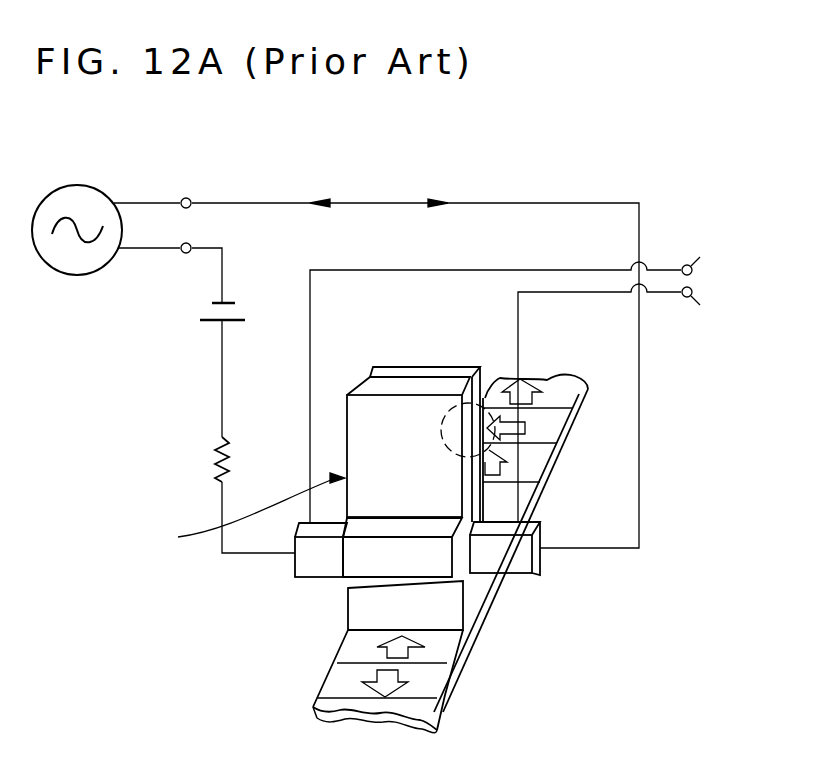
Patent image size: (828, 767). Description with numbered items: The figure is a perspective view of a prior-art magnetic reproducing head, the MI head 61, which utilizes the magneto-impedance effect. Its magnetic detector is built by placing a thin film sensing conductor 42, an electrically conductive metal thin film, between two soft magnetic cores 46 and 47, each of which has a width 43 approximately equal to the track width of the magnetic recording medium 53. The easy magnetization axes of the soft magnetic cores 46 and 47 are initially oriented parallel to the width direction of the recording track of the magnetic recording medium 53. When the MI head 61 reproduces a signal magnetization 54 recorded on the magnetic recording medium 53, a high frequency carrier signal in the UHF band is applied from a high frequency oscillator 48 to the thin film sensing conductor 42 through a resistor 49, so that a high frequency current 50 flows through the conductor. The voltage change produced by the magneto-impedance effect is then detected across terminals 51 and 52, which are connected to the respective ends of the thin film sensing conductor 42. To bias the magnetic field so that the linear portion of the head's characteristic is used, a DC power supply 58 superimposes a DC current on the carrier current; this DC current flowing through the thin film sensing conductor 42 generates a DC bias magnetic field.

The thin film sensing conductor 42 is at (302, 560).
The width 43 is at (470, 367).
The soft magnetic core 46 is at (483, 490).
The soft magnetic core 47 is at (478, 502).
The high frequency oscillator 48 is at (103, 188).
The resistor 49 is at (215, 450).
The high frequency current 50 is at (380, 202).
The terminal 51 is at (515, 374).
The terminal 52 is at (619, 403).
The magnetic recording medium 53 is at (427, 708).
The signal magnetization 54 is at (408, 652).
The DC power supply 58 is at (203, 320).
The MI head 61 is at (247, 514).